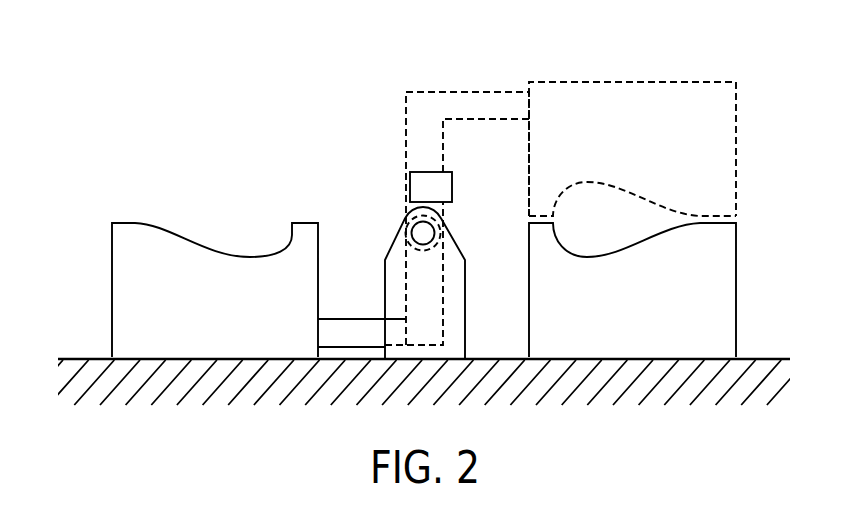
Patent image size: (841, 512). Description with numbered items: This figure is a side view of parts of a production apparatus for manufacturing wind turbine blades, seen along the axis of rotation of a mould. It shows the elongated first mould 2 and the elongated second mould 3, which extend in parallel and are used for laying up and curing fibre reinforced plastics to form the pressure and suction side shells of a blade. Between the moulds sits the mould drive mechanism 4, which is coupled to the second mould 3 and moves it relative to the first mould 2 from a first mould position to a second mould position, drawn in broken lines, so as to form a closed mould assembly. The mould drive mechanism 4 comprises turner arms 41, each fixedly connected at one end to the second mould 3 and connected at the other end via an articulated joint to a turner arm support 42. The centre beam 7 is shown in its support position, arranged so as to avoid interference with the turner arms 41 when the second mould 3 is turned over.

The first mould 2 is at (737, 277).
The second mould 3 is at (112, 258).
The mould drive mechanism 4 is at (392, 227).
The turner arm 41 is at (350, 328).
The turner arm support 42 is at (453, 321).
The centre beam 7 is at (452, 178).